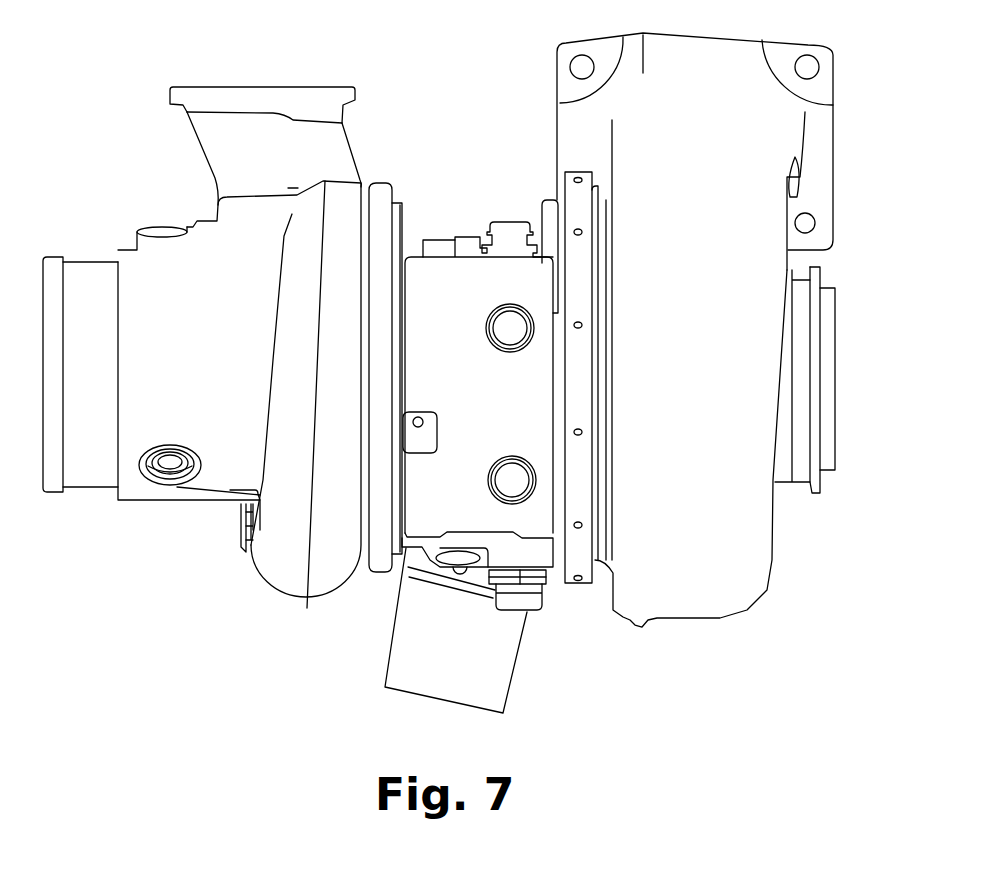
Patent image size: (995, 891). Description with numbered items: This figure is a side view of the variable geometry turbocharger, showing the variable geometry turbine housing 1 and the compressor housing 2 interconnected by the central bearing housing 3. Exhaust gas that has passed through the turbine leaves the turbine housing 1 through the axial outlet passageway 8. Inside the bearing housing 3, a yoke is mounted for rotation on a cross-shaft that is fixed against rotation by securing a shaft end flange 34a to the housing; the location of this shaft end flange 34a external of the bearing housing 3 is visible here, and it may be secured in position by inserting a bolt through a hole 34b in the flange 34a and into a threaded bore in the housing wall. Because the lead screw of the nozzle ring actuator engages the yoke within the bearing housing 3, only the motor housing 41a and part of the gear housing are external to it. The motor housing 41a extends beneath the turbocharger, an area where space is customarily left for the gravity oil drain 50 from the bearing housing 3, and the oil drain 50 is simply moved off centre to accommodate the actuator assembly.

The variable geometry turbine housing 1 is at (757, 295).
The compressor housing 2 is at (273, 560).
The bearing housing 3 is at (461, 282).
The axial outlet passageway 8 is at (817, 442).
The shaft end flange 34a is at (420, 443).
The hole 34b is at (420, 417).
The motor housing 41a is at (405, 662).
The gravity oil drain 50 is at (463, 560).